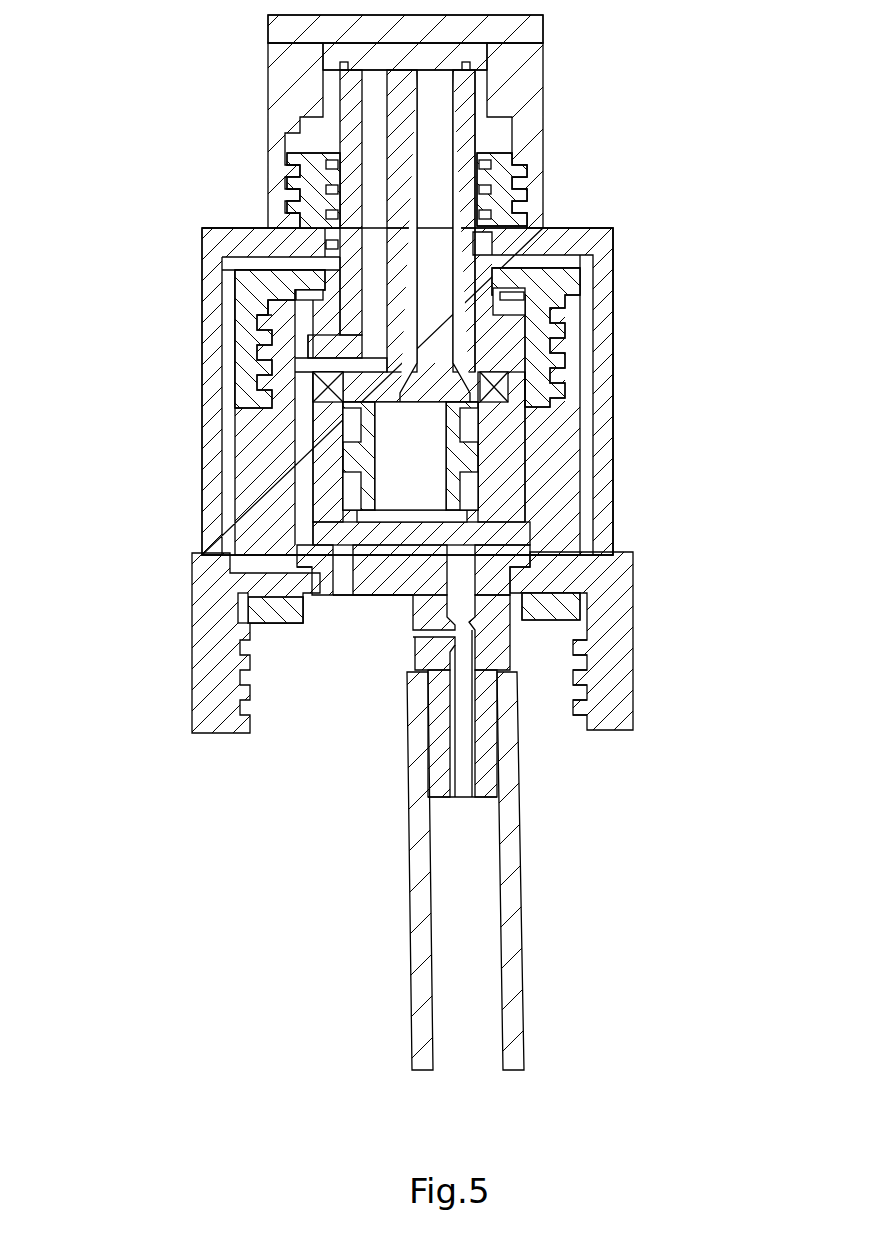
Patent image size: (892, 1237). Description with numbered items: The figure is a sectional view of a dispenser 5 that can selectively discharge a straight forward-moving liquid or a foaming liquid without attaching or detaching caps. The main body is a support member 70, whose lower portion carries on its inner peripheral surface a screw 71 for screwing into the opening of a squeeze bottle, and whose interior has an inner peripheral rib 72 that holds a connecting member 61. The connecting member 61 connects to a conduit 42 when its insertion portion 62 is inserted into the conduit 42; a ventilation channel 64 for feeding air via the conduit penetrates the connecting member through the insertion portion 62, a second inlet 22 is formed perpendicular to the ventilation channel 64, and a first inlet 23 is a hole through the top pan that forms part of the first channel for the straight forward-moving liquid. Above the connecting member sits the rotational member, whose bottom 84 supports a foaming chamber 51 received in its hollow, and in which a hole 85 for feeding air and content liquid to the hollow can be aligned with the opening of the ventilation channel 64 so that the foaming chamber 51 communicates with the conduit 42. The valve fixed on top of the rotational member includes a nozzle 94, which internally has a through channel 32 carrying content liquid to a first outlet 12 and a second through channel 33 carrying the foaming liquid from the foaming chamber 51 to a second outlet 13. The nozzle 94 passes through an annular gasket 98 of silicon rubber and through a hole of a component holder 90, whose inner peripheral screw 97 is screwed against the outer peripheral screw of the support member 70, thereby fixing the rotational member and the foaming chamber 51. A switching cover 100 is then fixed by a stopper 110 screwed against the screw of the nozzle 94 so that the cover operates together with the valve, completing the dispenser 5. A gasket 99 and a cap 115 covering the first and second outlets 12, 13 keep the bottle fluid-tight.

The dispenser 5 is at (668, 377).
The first outlet 12 is at (368, 67).
The second outlet 13 is at (428, 67).
The second inlet 22 is at (410, 633).
The first inlet 23 is at (345, 597).
The through channel 32 is at (372, 150).
The second through channel 33 is at (432, 172).
The conduit 42 is at (420, 947).
The foaming chamber 51 is at (408, 462).
The connecting member 61 is at (396, 596).
The insertion portion 62 is at (437, 742).
The ventilation channel 64 is at (465, 780).
The support member 70 is at (620, 647).
The screw 71 is at (575, 680).
The inner peripheral rib 72 is at (515, 582).
The bottom 84 is at (385, 512).
The hole 85 is at (413, 553).
The component holder 90 is at (572, 290).
The nozzle 94 is at (478, 127).
The inner peripheral screw 97 is at (260, 352).
The annular gasket 98 is at (290, 310).
The gasket 99 is at (268, 75).
The switching cover 100 is at (605, 242).
The stopper 110 is at (497, 190).
The cap 115 is at (546, 88).